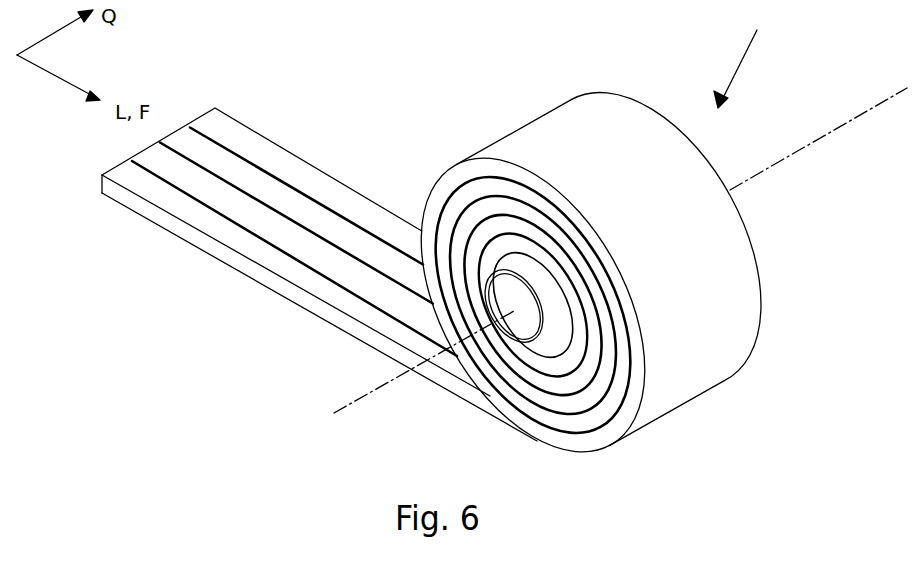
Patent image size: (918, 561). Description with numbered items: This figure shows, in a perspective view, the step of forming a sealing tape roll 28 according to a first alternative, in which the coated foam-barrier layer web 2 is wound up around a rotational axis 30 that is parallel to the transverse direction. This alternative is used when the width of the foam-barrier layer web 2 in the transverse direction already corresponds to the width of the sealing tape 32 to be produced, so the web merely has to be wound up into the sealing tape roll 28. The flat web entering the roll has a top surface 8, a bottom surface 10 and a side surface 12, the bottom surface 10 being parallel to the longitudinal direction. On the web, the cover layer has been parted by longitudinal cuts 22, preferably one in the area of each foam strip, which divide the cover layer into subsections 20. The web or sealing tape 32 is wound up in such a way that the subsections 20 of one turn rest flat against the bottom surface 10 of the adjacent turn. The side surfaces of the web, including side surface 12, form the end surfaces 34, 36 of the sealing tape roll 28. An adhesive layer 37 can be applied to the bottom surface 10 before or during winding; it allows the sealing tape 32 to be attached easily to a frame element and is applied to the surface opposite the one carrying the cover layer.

The foam-barrier layer web 2 is at (307, 234).
The sealing tape 32 is at (307, 234).
The subsections of cover layer 20 is at (277, 225).
The cut 22 is at (267, 238).
The side surface 12 is at (280, 287).
The top surface 8 is at (338, 298).
The bottom surface 10 is at (637, 133).
The sealing tape roll 28 is at (744, 55).
The rotational axis 30 is at (820, 137).
The end surface 34 is at (577, 383).
The end surface 36 is at (760, 296).
The adhesive layer 37 is at (683, 360).